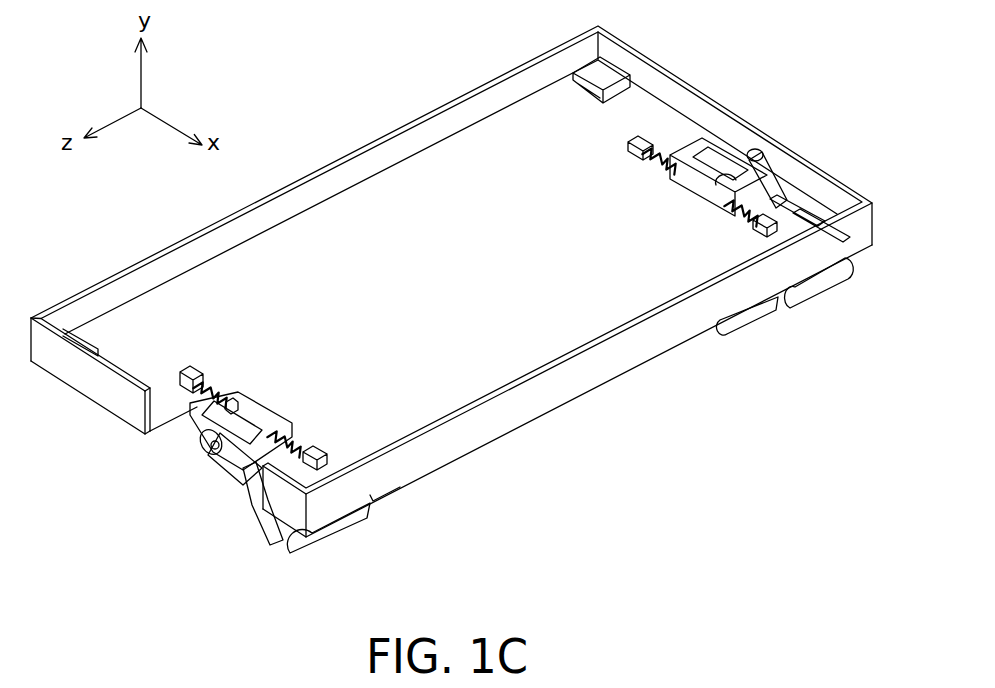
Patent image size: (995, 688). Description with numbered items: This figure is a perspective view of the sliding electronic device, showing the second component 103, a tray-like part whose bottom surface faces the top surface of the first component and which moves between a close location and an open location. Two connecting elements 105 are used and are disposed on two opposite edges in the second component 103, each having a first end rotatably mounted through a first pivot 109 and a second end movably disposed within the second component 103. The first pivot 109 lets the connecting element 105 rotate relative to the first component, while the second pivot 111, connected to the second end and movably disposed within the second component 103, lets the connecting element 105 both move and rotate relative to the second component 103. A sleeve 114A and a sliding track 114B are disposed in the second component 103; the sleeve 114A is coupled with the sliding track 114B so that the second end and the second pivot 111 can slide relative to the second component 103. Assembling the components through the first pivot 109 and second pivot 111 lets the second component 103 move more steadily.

The second component 103 is at (607, 361).
The connecting element 105 is at (770, 174).
The first pivot 109 is at (283, 537).
The second pivot 111 is at (211, 452).
The sleeve 114A is at (212, 408).
The sliding track 114B is at (192, 390).